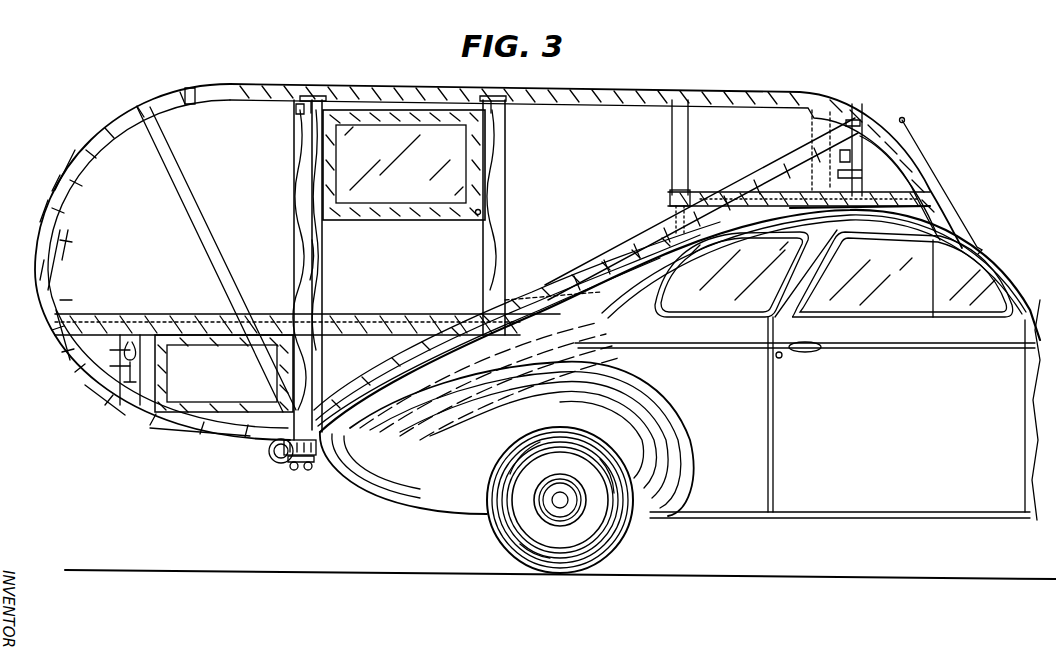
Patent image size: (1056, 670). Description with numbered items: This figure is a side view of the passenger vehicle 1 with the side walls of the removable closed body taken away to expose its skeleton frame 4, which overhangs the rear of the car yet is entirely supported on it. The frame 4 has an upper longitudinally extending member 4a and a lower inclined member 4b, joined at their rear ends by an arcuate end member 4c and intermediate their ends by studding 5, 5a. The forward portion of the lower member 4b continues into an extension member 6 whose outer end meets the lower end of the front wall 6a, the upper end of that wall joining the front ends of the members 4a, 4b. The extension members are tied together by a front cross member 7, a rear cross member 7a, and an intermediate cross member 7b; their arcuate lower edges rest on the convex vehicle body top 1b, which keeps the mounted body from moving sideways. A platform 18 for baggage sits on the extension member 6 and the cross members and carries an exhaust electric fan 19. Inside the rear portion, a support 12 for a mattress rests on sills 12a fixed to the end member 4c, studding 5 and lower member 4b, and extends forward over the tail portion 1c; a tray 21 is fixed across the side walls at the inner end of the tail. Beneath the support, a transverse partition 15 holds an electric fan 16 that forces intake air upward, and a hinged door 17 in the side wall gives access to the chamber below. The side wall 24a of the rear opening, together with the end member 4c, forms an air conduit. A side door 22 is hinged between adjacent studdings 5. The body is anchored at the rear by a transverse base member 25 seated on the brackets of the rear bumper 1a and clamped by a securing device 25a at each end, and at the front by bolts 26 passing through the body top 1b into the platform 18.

The passenger vehicle 1 is at (680, 391).
The rear bumper 1a is at (282, 460).
The vehicle body top 1b is at (730, 240).
The tail portion 1c is at (568, 346).
The skeleton frame 4 is at (494, 264).
The upper longitudinally extending member 4a is at (572, 102).
The lower inclined member 4b is at (624, 258).
The end member 4c is at (42, 256).
The studding 5 is at (292, 228).
The studding 5a is at (688, 140).
The extension member 6 is at (786, 188).
The front wall 6a is at (922, 152).
The front cross member 7 is at (936, 204).
The rear cross member 7a is at (669, 199).
The intermediate cross member 7b is at (870, 200).
The support 12 is at (195, 314).
The sill 12a is at (322, 328).
The transverse partition 15 is at (117, 350).
The electric fan 16 is at (133, 336).
The hinged door 17 is at (166, 413).
The platform 18 is at (694, 192).
The exhaust electric fan 19 is at (830, 180).
The tray 21 is at (560, 298).
The door 22 is at (310, 250).
The side wall of opening 24a is at (68, 200).
The transverse base member 25 is at (282, 446).
The securing device 25a is at (292, 468).
The bolt 26 is at (848, 236).